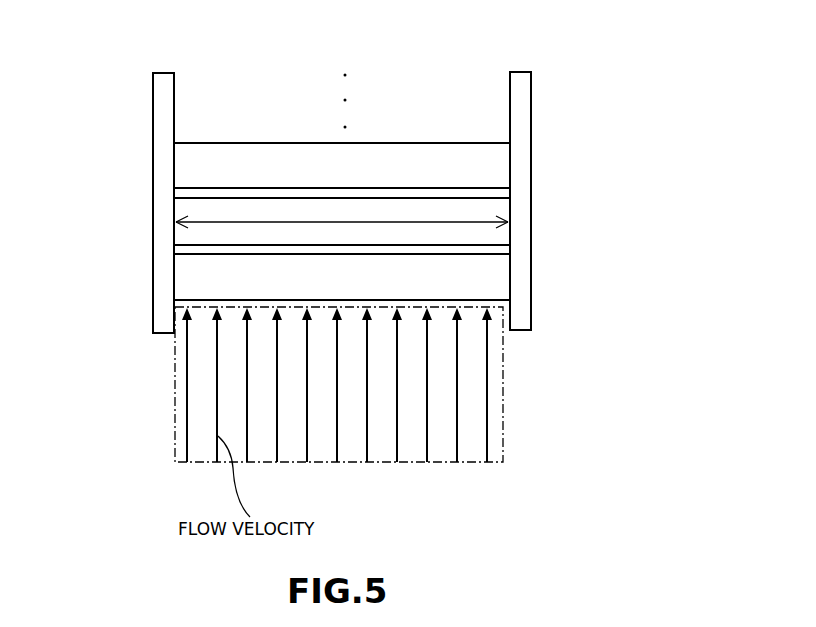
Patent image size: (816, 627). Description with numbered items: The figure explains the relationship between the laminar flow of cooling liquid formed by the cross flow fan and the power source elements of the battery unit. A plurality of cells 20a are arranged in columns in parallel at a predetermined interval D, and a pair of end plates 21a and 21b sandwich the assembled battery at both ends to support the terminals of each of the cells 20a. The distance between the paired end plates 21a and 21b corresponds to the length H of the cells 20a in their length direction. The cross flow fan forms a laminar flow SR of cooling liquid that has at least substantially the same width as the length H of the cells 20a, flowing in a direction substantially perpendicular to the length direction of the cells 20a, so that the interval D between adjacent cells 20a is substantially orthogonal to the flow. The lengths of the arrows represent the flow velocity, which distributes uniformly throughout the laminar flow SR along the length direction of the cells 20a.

The end plate 21a is at (522, 90).
The end plate 21b is at (163, 94).
The cell 20a is at (496, 166).
The interval D is at (383, 193).
The length of the cells H is at (462, 218).
The laminar flow SR is at (475, 462).